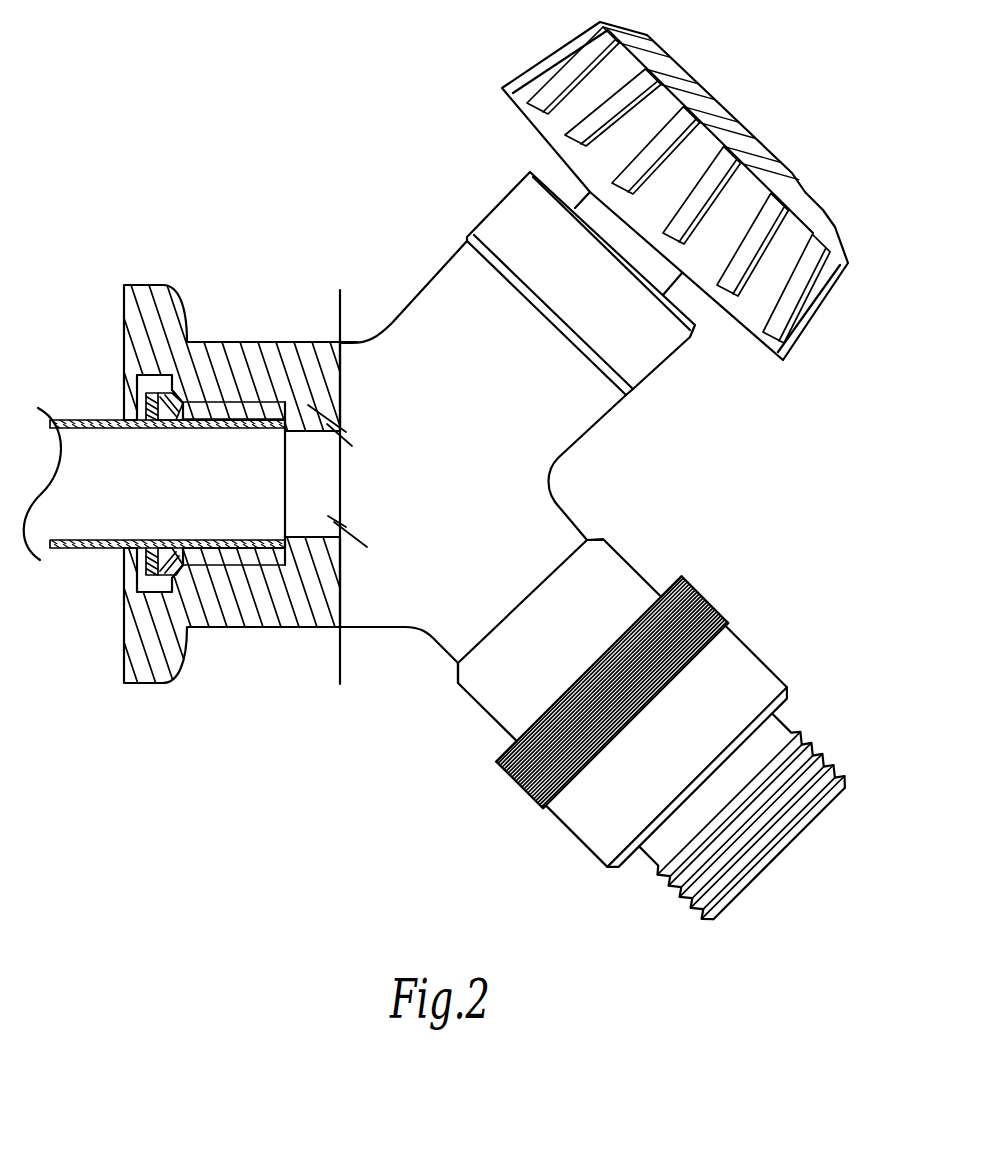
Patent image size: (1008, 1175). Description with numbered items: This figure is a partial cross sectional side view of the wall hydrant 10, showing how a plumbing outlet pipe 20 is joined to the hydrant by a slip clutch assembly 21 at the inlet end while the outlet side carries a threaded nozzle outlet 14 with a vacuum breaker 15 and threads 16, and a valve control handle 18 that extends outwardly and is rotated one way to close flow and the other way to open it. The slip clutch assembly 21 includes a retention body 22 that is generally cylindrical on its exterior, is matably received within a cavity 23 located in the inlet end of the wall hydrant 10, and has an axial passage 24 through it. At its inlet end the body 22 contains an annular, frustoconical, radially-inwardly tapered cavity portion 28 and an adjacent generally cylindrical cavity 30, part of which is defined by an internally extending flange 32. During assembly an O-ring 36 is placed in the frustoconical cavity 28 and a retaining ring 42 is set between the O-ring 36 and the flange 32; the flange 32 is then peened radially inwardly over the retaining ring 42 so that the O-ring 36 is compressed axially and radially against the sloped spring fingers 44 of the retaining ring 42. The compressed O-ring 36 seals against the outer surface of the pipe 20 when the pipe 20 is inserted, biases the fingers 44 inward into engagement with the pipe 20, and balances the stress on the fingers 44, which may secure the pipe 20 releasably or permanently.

The wall hydrant 10 is at (766, 72).
The threaded nozzle outlet 14 is at (807, 837).
The vacuum breaker 15 is at (752, 638).
The threads 16 is at (838, 776).
The valve control handle 18 is at (835, 215).
The plumbing outlet pipe 20 is at (77, 551).
The slip clutch assembly 21 is at (222, 573).
The retention body 22 is at (242, 413).
The cavity 23 is at (248, 403).
The axial passage 24 is at (187, 425).
The frustoconical cavity portion 28 is at (186, 395).
The cylindrical cavity 30 is at (182, 400).
The flange 32 is at (145, 398).
The O-ring 36 is at (168, 549).
The retaining ring 42 is at (142, 572).
The spring fingers 44 is at (153, 549).